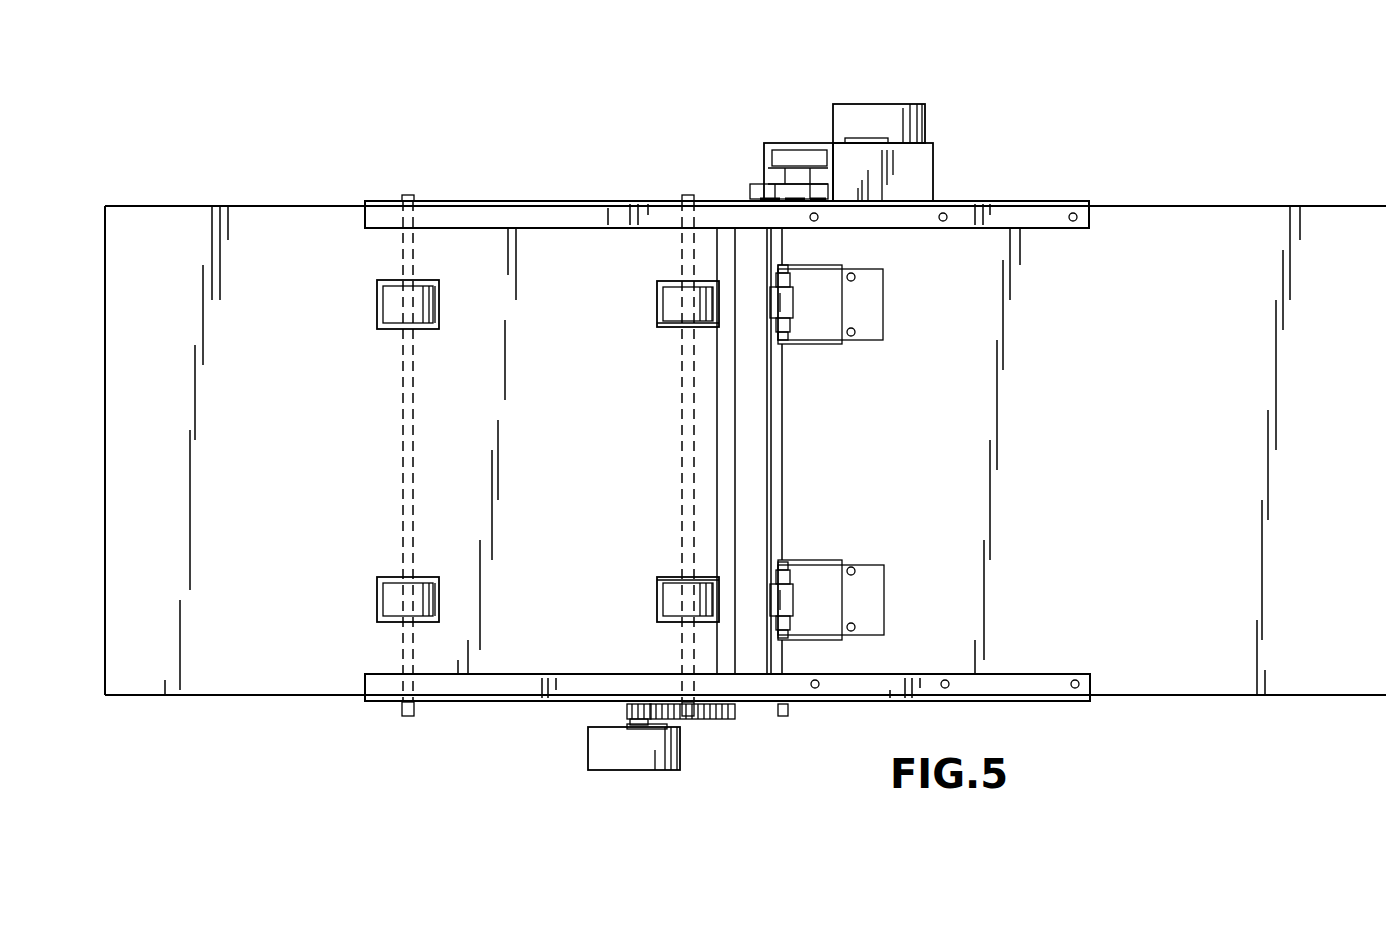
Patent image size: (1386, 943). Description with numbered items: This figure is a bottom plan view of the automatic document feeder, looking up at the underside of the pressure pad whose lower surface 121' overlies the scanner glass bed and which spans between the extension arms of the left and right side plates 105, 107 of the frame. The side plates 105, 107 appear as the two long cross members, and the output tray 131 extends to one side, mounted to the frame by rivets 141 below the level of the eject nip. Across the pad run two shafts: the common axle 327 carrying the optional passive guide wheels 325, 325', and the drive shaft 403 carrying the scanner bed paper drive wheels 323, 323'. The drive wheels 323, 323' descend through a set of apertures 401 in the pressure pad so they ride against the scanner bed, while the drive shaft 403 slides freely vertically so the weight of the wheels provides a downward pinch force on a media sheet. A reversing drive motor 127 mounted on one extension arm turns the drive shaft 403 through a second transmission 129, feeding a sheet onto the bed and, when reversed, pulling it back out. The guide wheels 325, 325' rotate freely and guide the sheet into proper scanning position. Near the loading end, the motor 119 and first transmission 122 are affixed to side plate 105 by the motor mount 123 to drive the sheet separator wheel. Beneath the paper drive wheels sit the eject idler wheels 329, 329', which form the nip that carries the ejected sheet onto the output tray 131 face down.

The left side plate 105 is at (562, 201).
The right side plate 107 is at (518, 702).
The motor 119 is at (873, 104).
The lower surface of the pressure pad 121' is at (235, 483).
The first transmission 122 is at (746, 160).
The motor mount 123 is at (933, 170).
The drive motor 127 is at (612, 770).
The second transmission 129 is at (710, 720).
The output tray 131 is at (1237, 680).
The rivets 141 is at (1073, 222).
The scanner bed paper drive wheel 323 is at (641, 304).
The scanner bed paper drive wheel 323' is at (641, 599).
The passive guide wheel 325 is at (361, 304).
The passive guide wheel 325' is at (361, 599).
The common axle 327 is at (408, 195).
The eject idler wheel 329 is at (863, 304).
The eject idler wheel 329' is at (866, 600).
The apertures 401 is at (668, 327).
The drive shaft 403 is at (688, 195).